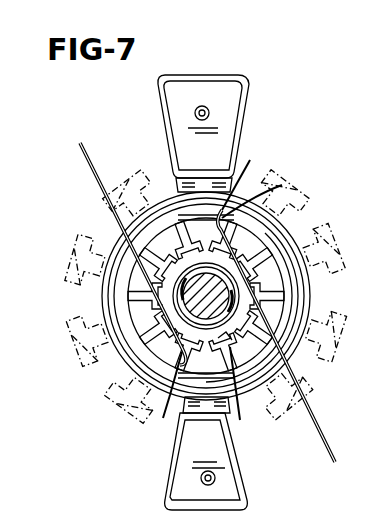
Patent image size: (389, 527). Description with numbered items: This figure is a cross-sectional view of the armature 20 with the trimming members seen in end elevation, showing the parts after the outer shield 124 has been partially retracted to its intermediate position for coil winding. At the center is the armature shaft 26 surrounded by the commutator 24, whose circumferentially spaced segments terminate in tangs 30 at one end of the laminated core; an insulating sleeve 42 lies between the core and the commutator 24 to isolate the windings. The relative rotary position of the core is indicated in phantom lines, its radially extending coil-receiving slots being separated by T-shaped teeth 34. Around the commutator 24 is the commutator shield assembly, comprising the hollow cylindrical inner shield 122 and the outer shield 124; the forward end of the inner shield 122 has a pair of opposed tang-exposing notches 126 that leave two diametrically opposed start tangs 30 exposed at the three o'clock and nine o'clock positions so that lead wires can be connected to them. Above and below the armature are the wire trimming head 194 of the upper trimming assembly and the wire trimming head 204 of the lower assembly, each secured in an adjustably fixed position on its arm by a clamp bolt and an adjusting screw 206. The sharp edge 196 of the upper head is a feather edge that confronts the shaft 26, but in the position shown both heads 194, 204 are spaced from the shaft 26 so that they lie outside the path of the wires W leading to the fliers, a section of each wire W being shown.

The armature 20 is at (146, 172).
The commutator 24 is at (252, 272).
The armature shaft 26 is at (199, 281).
The tangs 30 is at (160, 426).
The T-shaped teeth 34 is at (328, 238).
The insulating sleeve 42 is at (226, 326).
The inner shield 122 is at (123, 274).
The outer shield 124 is at (123, 245).
The tang-exposing notches 126 is at (252, 425).
The wire trimming head 194 is at (148, 91).
The sharp edge 196 is at (196, 193).
The wire trimming head 204 is at (168, 459).
The adjusting screw 206 is at (195, 113).
The wire W is at (85, 160).